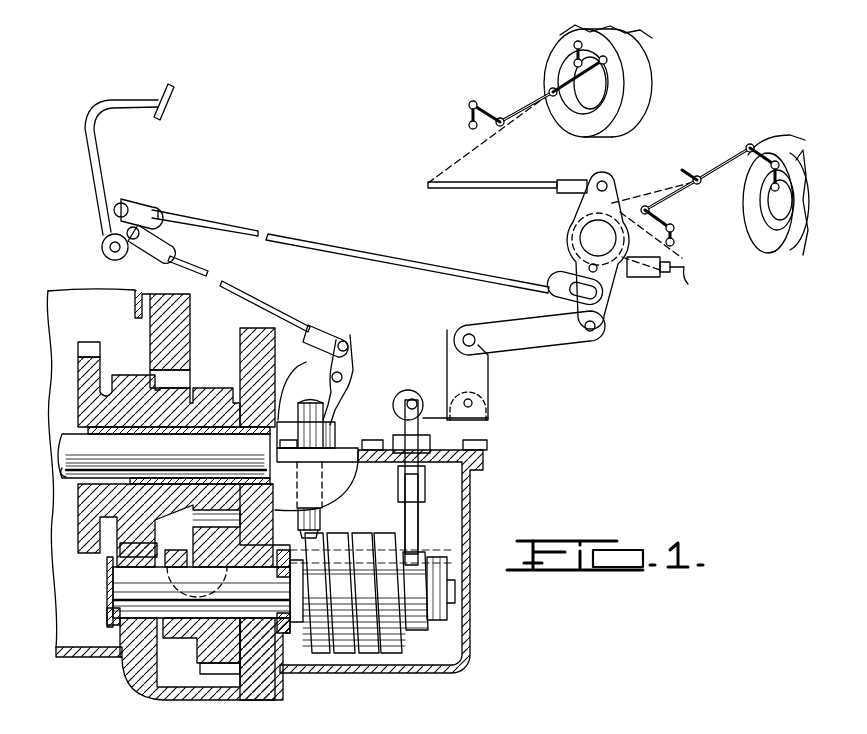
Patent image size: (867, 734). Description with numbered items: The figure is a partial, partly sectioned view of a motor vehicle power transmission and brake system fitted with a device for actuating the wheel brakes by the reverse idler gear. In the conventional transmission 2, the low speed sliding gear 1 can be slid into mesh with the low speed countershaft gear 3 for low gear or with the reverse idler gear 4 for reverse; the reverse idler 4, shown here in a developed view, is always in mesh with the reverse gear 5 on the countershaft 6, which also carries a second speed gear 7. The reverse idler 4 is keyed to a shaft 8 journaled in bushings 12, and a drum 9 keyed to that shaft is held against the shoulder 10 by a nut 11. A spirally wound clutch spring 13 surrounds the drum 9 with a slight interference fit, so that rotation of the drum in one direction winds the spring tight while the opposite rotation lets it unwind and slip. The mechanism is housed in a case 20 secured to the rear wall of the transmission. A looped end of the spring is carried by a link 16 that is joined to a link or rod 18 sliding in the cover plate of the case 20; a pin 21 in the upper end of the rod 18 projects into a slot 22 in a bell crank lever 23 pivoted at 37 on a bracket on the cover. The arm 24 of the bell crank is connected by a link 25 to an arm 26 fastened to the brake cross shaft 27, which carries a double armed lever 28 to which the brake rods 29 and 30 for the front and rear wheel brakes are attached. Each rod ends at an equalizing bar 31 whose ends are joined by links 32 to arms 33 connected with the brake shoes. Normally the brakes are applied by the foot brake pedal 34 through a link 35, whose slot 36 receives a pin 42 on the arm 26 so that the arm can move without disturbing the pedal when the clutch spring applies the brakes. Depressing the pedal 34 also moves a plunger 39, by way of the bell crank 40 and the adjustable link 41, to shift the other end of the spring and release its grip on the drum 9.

The low speed sliding gear 1 is at (156, 352).
The transmission 2 is at (294, 538).
The low speed countershaft gear 3 is at (128, 372).
The reverse idler gear 4 is at (202, 670).
The reverse gear 5 is at (228, 390).
The countershaft 6 is at (164, 455).
The second speed gear 7 is at (88, 342).
The shaft 8 is at (165, 600).
The drum 9 is at (270, 590).
The shoulder 10 is at (296, 523).
The nut 11 is at (445, 573).
The bushings 12 is at (108, 615).
The clutch spring 13 is at (380, 530).
The link 16 is at (418, 522).
The link or rod 18 is at (404, 418).
The case 20 is at (473, 640).
The pin 21 is at (404, 392).
The slot 22 is at (433, 374).
The bell crank lever 23 is at (472, 403).
The arm 24 is at (448, 352).
The link 25 is at (565, 345).
The arm 26 is at (610, 328).
The brake cross shaft 27 is at (582, 236).
The double armed lever 28 is at (616, 186).
The brake rod 29 is at (508, 192).
The brake rod 30 is at (663, 241).
The equalizing bar 31 is at (535, 92).
The links 32 is at (553, 92).
The arms 33 is at (574, 48).
The brake pedal 34 is at (128, 100).
The link 35 is at (325, 240).
The slot 36 is at (556, 300).
The pivot 37 is at (488, 412).
The plunger 39 is at (325, 512).
The bell crank 40 is at (354, 378).
The adjustable link 41 is at (272, 312).
The pin 42 is at (605, 300).